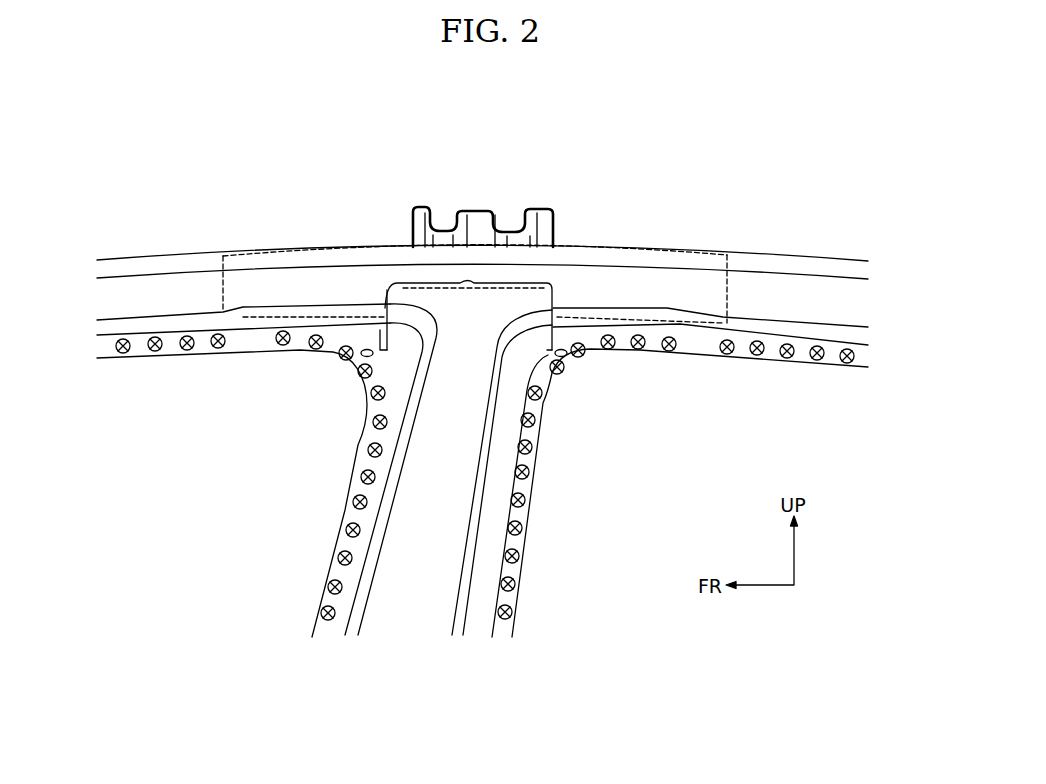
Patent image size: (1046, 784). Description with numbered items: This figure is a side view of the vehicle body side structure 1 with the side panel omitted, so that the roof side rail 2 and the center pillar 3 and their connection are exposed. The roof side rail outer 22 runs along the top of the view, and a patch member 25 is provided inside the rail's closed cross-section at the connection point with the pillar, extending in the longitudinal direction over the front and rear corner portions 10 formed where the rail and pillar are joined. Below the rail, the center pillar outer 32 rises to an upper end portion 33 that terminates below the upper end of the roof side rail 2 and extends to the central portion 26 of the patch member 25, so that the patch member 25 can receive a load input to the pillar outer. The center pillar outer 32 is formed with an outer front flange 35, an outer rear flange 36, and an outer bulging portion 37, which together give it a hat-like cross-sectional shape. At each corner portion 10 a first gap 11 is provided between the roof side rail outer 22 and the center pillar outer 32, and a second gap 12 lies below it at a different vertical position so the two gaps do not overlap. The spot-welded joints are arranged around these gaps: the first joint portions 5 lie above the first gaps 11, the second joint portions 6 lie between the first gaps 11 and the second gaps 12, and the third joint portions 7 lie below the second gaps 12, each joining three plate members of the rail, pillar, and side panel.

The vehicle body side structure 1 is at (523, 183).
The roof side rail 2 is at (735, 249).
The center pillar 3 is at (532, 574).
The first joint portion 5 is at (347, 347).
The second joint portion 6 is at (347, 365).
The third joint portion 7 is at (363, 390).
The corner portion 10 is at (333, 372).
The first gap 11 is at (372, 347).
The second gap 12 is at (372, 390).
The roof side rail outer 22 is at (186, 283).
The patch member 25 is at (667, 273).
The central portion 26 is at (490, 282).
The center pillar outer 32 is at (400, 563).
The upper end portion 33 is at (515, 300).
The outer front flange 35 is at (320, 596).
The outer rear flange 36 is at (508, 600).
The outer bulging portion 37 is at (438, 528).